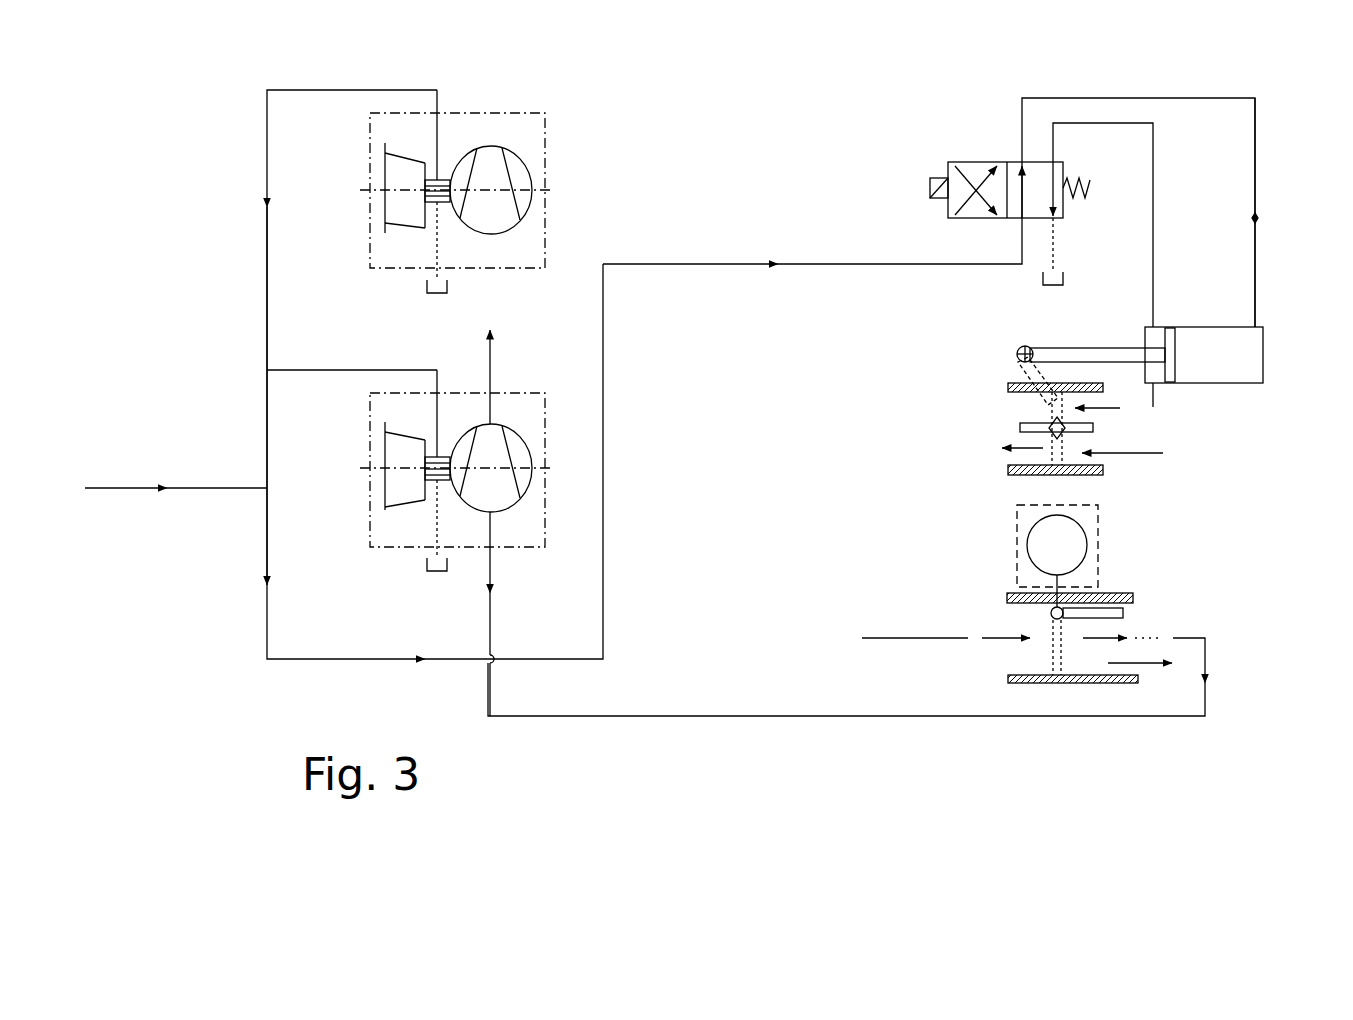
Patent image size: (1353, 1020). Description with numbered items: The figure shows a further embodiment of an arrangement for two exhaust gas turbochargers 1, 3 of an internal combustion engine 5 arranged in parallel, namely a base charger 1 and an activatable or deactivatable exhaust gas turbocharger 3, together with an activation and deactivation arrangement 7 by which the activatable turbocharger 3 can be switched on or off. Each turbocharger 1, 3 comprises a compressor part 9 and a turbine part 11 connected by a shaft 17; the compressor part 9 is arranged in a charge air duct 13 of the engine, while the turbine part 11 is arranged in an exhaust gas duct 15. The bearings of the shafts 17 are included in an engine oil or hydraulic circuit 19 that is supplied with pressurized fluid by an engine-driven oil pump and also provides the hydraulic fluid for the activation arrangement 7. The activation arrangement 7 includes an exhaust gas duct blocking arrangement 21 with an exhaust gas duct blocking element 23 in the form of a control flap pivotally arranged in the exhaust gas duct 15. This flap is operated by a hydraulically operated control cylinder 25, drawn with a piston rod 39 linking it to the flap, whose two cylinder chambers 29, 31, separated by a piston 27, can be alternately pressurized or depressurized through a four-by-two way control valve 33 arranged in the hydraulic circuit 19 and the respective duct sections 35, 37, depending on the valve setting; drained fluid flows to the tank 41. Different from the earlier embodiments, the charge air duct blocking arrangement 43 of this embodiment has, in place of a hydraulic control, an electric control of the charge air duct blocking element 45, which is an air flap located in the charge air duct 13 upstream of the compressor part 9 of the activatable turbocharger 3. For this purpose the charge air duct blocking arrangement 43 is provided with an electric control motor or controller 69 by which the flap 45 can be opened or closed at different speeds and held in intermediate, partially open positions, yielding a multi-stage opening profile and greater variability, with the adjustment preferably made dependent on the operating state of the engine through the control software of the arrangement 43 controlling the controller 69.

The base charger 1 is at (528, 143).
The activatable exhaust gas turbocharger 3 is at (395, 525).
The internal combustion engine 5 is at (797, 221).
The activation and deactivation arrangement 7 is at (940, 322).
The compressor part 9 is at (520, 177).
The turbine part 11 is at (392, 213).
The charge air duct 13 is at (775, 687).
The exhaust gas duct 15 is at (1101, 440).
The shaft 17 is at (427, 188).
The hydraulic circuit 19 is at (700, 263).
The exhaust gas duct blocking arrangement 21 is at (1188, 407).
The exhaust gas duct blocking element 23 is at (1027, 427).
The hydraulic control cylinder 25 is at (1267, 323).
The piston 27 is at (1170, 327).
The cylinder chamber 29 is at (1248, 373).
The cylinder chamber 31 is at (1167, 408).
The control valve 33 is at (953, 152).
The duct section 35 is at (1154, 238).
The duct section 37 is at (1255, 204).
The piston rod 39 is at (1055, 352).
The tank 41 is at (423, 287).
The charge air duct blocking arrangement 43 is at (982, 579).
The charge air duct blocking element 45 is at (1123, 615).
The electric control motor 69 is at (1107, 555).